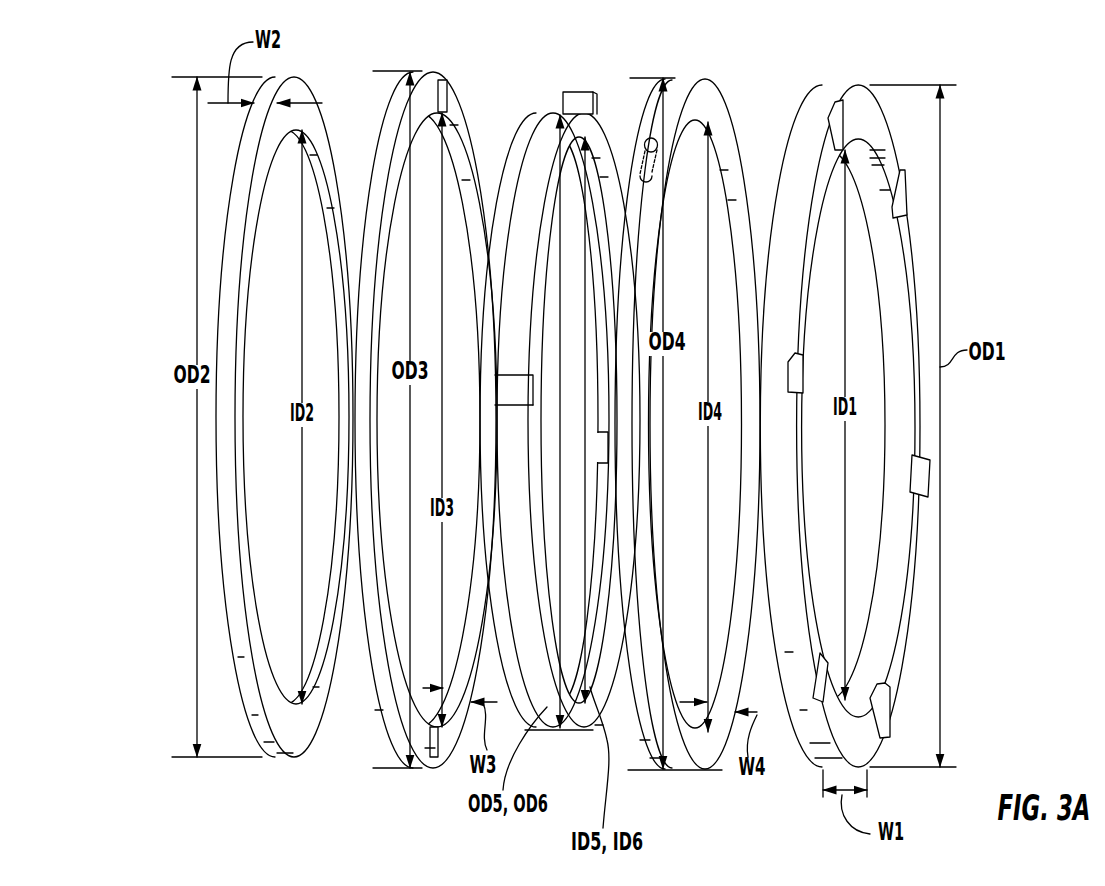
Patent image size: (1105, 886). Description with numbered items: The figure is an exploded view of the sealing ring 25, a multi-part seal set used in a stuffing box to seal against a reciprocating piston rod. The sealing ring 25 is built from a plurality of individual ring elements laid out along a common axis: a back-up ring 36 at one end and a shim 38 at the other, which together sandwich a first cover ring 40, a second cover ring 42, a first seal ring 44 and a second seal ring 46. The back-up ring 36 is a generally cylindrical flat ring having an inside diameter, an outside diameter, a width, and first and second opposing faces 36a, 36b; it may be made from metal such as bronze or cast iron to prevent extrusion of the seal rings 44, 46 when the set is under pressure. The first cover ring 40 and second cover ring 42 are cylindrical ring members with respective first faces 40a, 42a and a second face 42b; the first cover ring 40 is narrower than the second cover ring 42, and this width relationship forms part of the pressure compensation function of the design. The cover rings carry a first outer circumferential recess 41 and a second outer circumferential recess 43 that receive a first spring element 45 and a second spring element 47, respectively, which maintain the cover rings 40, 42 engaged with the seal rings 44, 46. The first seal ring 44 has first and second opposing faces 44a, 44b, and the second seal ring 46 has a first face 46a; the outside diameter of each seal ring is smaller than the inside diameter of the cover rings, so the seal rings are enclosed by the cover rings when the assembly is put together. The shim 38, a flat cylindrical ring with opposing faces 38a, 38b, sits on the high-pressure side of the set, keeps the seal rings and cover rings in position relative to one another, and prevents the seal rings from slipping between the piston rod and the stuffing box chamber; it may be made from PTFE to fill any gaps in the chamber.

The sealing ring 25 is at (113, 188).
The back-up ring 36 is at (292, 413).
The first face of back-up ring 36a is at (332, 126).
The second face of back-up ring 36b is at (260, 738).
The first cover ring 40 is at (429, 416).
The first face of first cover ring 40a is at (472, 130).
The first outer circumferential recess 41 is at (400, 97).
The first spring element 45 is at (387, 723).
The first seal ring 44 is at (527, 127).
The first face of first seal ring 44a is at (497, 375).
The second face of first seal ring 44b is at (496, 405).
The second seal ring 46 is at (582, 381).
The first face of second seal ring 46a is at (528, 442).
The second outer circumferential recess 43 is at (638, 155).
The second spring element 47 is at (687, 78).
The second cover ring 42 is at (704, 422).
The first face of second cover ring 42a is at (749, 149).
The second face of second cover ring 42b is at (647, 730).
The shim ring 38 is at (881, 445).
The first face of shim ring 38a is at (872, 108).
The second face of shim ring 38b is at (803, 743).